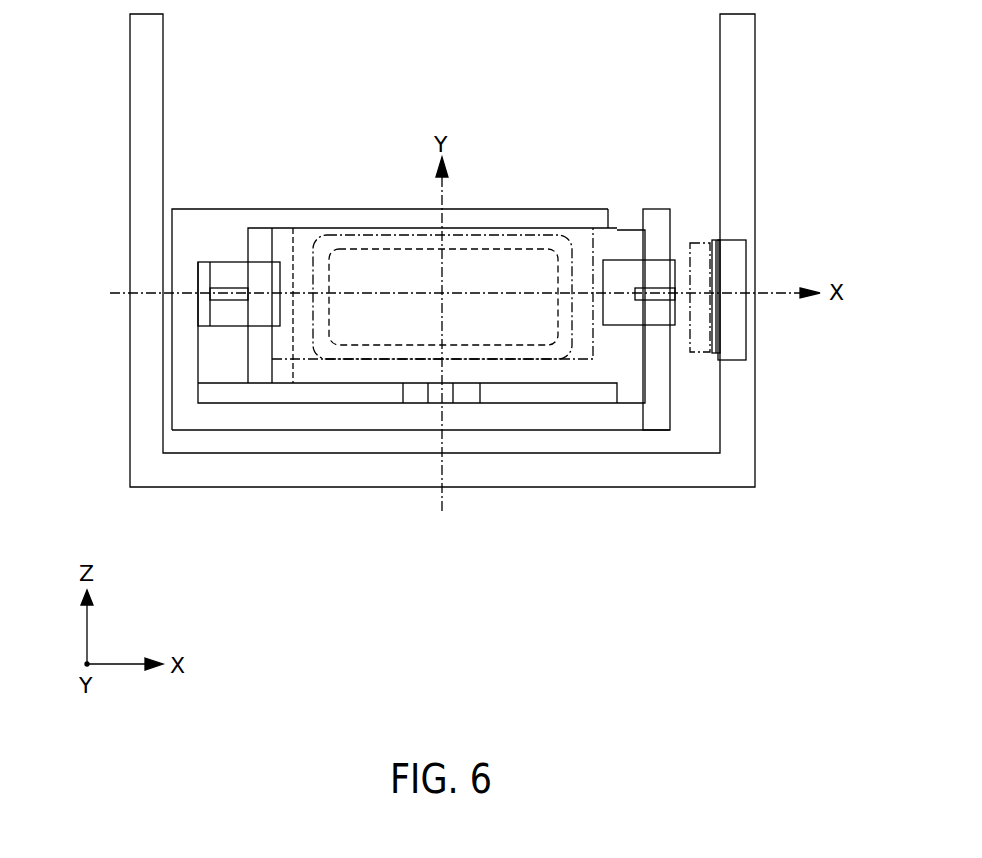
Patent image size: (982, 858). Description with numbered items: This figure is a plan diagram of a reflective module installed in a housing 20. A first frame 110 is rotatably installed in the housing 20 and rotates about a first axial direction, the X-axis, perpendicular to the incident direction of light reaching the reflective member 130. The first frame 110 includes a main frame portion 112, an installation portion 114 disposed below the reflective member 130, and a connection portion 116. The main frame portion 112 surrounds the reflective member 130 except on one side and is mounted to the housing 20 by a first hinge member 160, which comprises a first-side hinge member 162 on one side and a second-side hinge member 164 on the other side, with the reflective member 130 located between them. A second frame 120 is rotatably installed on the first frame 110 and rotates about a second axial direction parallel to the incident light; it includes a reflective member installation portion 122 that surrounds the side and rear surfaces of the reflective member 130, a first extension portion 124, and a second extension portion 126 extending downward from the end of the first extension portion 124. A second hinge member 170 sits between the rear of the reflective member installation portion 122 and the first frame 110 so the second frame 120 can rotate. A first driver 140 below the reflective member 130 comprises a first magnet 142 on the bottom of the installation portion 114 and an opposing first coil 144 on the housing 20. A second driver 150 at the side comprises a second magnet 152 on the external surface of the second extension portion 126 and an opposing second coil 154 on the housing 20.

The housing 20 is at (140, 433).
The first frame 110 is at (480, 85).
The main frame portion 112 is at (318, 442).
The installation portion 114 is at (478, 222).
The connection portion 116 is at (180, 288).
The second frame 120 is at (690, 165).
The reflective member installation portion 122 is at (603, 238).
The first extension portion 124 is at (650, 242).
The second extension portion 126 is at (688, 233).
The reflective member 130 is at (278, 236).
The first driver 140 is at (595, 532).
The first magnet 142 is at (497, 335).
The first coil 144 is at (545, 350).
The second driver 150 is at (818, 208).
The second magnet 152 is at (703, 253).
The second coil 154 is at (735, 257).
The first hinge member 160 is at (347, 545).
The 1-1 hinge member 162 is at (620, 292).
The 1-2 hinge member 164 is at (230, 297).
The second hinge member 170 is at (437, 395).